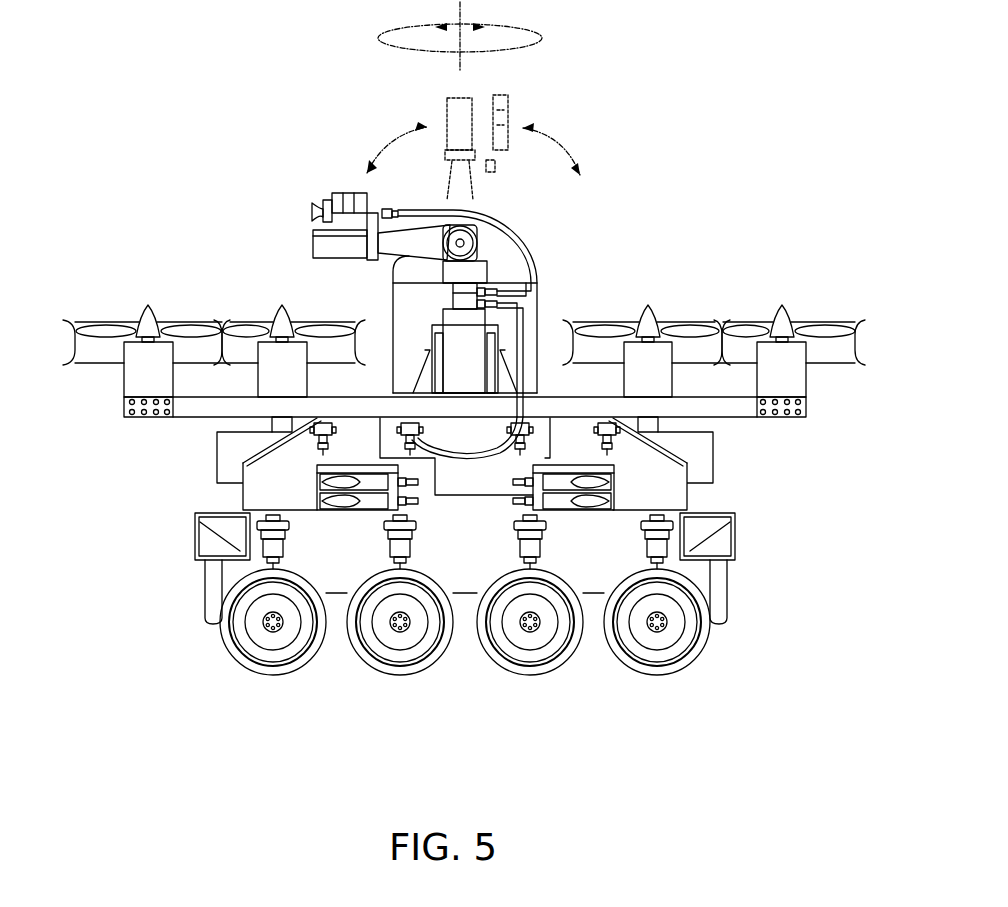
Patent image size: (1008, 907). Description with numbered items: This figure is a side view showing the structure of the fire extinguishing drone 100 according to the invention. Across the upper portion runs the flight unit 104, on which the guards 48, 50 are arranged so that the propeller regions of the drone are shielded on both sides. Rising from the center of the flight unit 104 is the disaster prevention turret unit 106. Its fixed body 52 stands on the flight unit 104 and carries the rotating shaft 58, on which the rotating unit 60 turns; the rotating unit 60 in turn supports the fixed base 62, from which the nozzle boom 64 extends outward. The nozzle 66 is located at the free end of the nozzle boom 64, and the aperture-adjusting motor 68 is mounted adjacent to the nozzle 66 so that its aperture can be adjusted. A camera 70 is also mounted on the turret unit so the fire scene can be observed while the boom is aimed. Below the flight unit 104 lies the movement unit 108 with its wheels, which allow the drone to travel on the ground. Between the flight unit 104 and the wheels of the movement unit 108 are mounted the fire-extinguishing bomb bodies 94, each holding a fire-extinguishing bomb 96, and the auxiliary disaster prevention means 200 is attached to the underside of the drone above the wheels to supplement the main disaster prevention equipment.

The guard 48 is at (113, 323).
The guard 50 is at (72, 318).
The fixed body 52 is at (506, 334).
The rotating shaft 58 is at (453, 298).
The rotating unit 60 is at (486, 277).
The fixed base 62 is at (480, 256).
The nozzle boom 64 is at (409, 228).
The nozzle 66 is at (310, 209).
The aperture-adjusting motor 68 is at (347, 192).
The camera 70 is at (313, 244).
The fire-extinguishing bomb body 94 is at (320, 501).
The fire-extinguishing bomb 96 is at (320, 482).
The fire extinguishing drone 100 is at (630, 113).
The flight unit 104 is at (178, 427).
The disaster prevention turret unit 106 is at (566, 236).
The movement unit 108 is at (287, 690).
The auxiliary disaster prevention means 200 is at (351, 522).